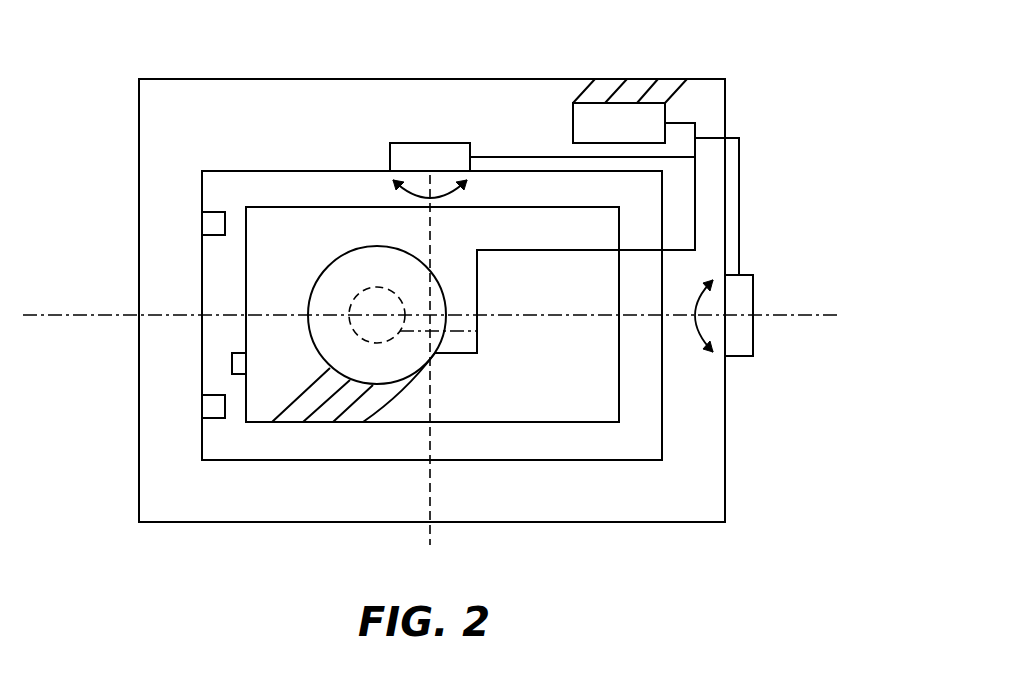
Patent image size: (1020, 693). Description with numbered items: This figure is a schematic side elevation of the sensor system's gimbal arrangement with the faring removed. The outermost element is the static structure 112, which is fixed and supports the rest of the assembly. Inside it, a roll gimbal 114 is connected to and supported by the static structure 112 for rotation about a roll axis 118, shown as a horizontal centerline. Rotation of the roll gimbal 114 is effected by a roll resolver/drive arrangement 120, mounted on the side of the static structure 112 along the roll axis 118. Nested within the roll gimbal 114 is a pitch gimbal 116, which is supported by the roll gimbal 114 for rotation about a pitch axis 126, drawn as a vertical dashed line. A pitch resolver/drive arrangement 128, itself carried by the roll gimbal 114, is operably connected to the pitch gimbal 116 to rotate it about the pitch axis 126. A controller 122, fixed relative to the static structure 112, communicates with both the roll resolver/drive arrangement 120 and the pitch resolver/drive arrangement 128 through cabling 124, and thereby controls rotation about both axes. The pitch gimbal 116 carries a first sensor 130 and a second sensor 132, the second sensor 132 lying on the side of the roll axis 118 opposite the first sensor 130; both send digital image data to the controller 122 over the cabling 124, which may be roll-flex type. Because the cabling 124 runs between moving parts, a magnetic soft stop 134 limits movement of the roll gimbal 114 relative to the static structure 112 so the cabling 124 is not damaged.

The static structure 112 is at (393, 78).
The roll gimbal 114 is at (227, 460).
The pitch gimbal 116 is at (602, 422).
The roll axis 118 is at (37, 317).
The roll resolver/drive arrangement 120 is at (755, 298).
The controller 122 is at (573, 125).
The cabling 124 is at (519, 250).
The pitch axis 126 is at (430, 482).
The pitch resolver/drive arrangement 128 is at (407, 142).
The first sensor 130 is at (310, 345).
The second sensor 132 is at (362, 292).
The magnetic soft stop 134 is at (212, 210).